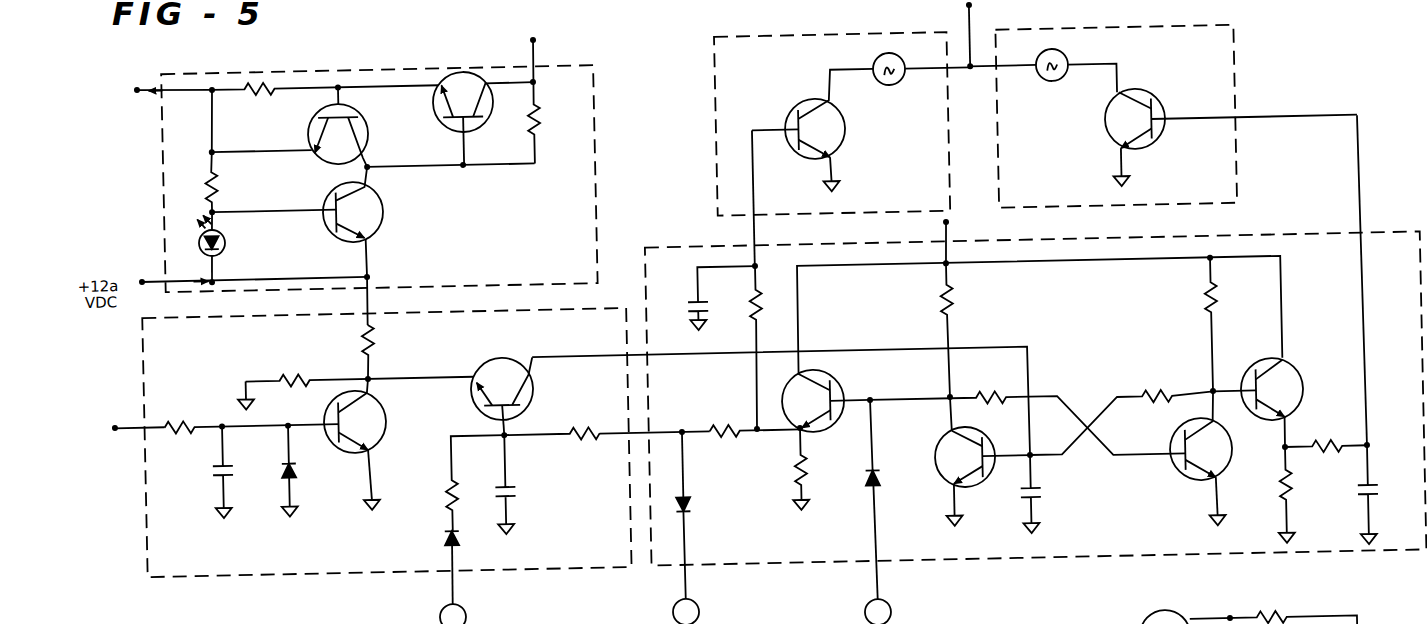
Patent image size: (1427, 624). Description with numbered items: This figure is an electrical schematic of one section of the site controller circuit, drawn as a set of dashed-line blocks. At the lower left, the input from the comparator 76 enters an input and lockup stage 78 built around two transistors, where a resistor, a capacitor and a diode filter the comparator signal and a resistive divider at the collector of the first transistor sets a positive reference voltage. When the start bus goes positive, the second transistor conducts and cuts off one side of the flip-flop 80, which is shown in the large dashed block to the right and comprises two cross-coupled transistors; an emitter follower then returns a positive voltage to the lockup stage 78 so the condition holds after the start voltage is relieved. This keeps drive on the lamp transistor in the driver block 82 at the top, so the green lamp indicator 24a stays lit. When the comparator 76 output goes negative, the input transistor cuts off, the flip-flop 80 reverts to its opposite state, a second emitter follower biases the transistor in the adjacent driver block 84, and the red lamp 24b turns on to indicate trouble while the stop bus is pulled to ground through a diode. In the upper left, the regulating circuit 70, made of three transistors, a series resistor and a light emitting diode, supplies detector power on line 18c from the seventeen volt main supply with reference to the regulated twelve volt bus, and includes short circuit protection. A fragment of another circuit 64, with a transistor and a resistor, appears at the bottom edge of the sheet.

The detector power line 18c is at (145, 91).
The regulating circuit 70 is at (603, 96).
The comparator 76 is at (116, 419).
The input amplifier circuit 78 is at (140, 350).
The flip-flop 80 is at (674, 243).
The lamp driver circuit 82 is at (720, 34).
The lamp driver circuit 84 is at (1079, 34).
The green lamp indicator 24a is at (889, 80).
The red lamp 24b is at (1052, 76).
The circuit 64 is at (1308, 614).